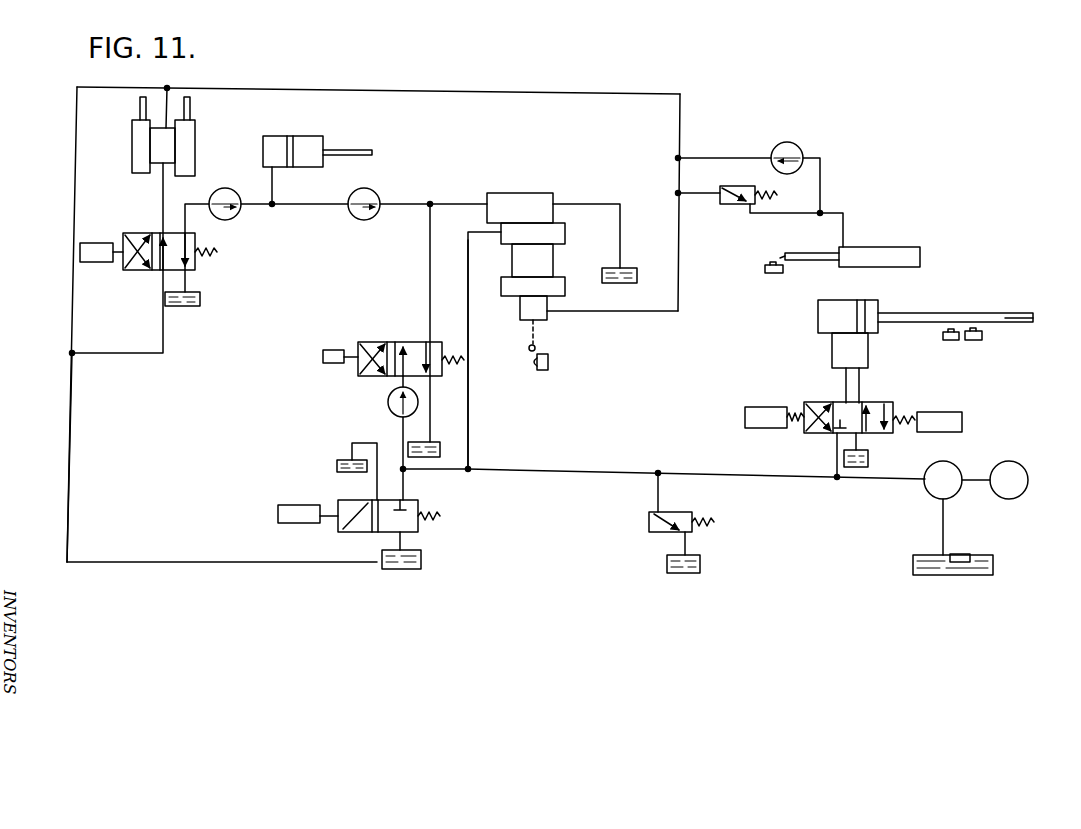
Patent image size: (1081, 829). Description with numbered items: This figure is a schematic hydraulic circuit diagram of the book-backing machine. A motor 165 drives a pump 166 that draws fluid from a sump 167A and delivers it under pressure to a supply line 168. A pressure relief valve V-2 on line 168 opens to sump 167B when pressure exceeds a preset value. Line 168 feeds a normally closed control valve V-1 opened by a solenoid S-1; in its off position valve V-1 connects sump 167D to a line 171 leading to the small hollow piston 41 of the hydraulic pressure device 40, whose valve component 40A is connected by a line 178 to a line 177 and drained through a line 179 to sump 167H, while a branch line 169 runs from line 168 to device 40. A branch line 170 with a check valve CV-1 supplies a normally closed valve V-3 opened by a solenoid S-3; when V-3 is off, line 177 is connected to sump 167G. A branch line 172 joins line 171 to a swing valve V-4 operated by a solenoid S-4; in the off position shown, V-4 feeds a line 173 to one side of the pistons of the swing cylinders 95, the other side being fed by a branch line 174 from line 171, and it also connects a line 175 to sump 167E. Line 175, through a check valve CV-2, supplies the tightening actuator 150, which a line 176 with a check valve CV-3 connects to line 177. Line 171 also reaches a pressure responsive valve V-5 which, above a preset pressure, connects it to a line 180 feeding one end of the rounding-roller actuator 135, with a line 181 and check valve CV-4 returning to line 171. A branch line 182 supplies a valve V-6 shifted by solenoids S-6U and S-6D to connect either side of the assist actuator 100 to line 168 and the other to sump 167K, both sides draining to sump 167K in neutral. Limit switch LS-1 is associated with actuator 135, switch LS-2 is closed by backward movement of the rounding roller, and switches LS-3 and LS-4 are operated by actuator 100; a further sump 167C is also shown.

The branch line 174 is at (170, 102).
The swing cylinders 95 is at (132, 131).
The line 173 is at (163, 210).
The branch line 172 is at (138, 355).
The line 175 is at (203, 200).
The check valve CV-2 is at (233, 214).
The tightening actuator 150 is at (305, 136).
The check valve CV-3 is at (377, 219).
The line 176 is at (398, 204).
The line 178 is at (455, 204).
The line 177 is at (426, 302).
The branch line 169 is at (468, 426).
The valve component 40A is at (533, 190).
The hydraulic pressure device 40 is at (591, 259).
The small hollow piston 41 is at (520, 311).
The limit switch LS-2 is at (548, 365).
The line 179 is at (583, 204).
The sump 167H is at (638, 283).
The check valve CV-4 is at (800, 150).
The line 181 is at (822, 210).
The pressure responsive valve V-5 is at (745, 178).
The line 180 is at (800, 213).
The actuator 135 is at (903, 236).
The limit switch LS-1 is at (782, 273).
The assist actuator 100 is at (848, 292).
The limit switch LS-3 is at (943, 335).
The limit switch LS-4 is at (972, 341).
The swing valve V-4 is at (138, 270).
The solenoid S-4 is at (118, 243).
The sump 167E is at (192, 306).
The normally closed valve V-3 is at (393, 342).
The solenoid S-3 is at (347, 350).
The check valve CV-1 is at (388, 411).
The branch line 170 is at (400, 437).
The sump 167G is at (441, 452).
The supply line 168 is at (770, 473).
The sump 167D is at (337, 466).
The control valve V-1 is at (415, 502).
The solenoid S-1 is at (320, 505).
The line 171 is at (198, 548).
The sump 167C is at (400, 570).
The pressure relief valve V-2 is at (659, 530).
The sump 167B is at (702, 566).
The valve V-6 is at (878, 405).
The solenoid S-6D is at (779, 400).
The solenoid S-6U is at (945, 412).
The branch line 182 is at (837, 459).
The sump 167K is at (869, 460).
The pump 166 is at (951, 465).
The motor 165 is at (1007, 462).
The sump 167A is at (985, 556).